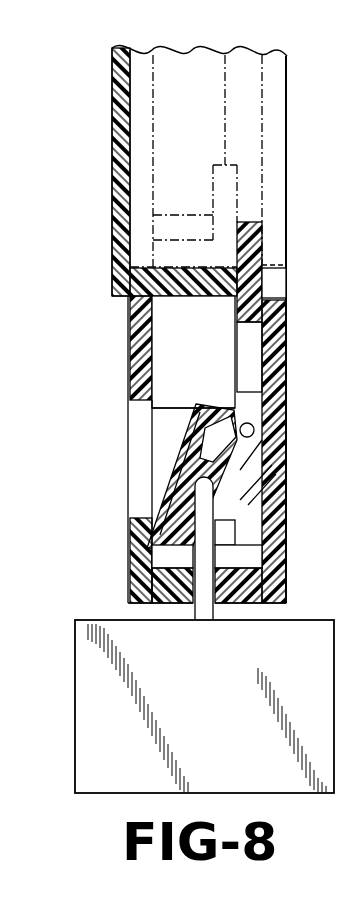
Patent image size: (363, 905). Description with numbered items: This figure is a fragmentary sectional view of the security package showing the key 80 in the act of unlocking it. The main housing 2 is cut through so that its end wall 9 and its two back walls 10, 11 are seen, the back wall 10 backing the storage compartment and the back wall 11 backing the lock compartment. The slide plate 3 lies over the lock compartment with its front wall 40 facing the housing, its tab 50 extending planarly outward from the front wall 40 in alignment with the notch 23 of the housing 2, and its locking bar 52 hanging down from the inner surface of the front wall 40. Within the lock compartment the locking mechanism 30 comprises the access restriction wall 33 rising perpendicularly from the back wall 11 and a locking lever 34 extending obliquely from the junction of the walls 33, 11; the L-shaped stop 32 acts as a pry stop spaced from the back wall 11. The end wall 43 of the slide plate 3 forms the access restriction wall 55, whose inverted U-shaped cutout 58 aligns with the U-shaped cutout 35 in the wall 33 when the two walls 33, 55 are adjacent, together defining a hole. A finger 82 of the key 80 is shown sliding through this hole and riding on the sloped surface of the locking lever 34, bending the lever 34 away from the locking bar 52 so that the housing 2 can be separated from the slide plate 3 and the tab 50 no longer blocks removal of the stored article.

The main housing 2 is at (110, 170).
The slide plate 3 is at (290, 586).
The end wall 9 is at (191, 288).
The back wall 10 is at (112, 128).
The back wall 11 is at (128, 362).
The notch 23 is at (272, 287).
The locking mechanism 30 is at (160, 474).
The L-shaped stop 32 is at (163, 392).
The access restriction wall 33 is at (240, 537).
The locking lever 34 is at (182, 440).
The cutout 35 is at (236, 510).
The front wall 40 is at (286, 392).
The end wall 43 is at (232, 572).
The tab 50 is at (255, 240).
The locking bar 52 is at (247, 434).
The access restriction wall 55 is at (178, 570).
The cutout 58 is at (170, 555).
The key 80 is at (92, 796).
The finger 82 is at (214, 482).